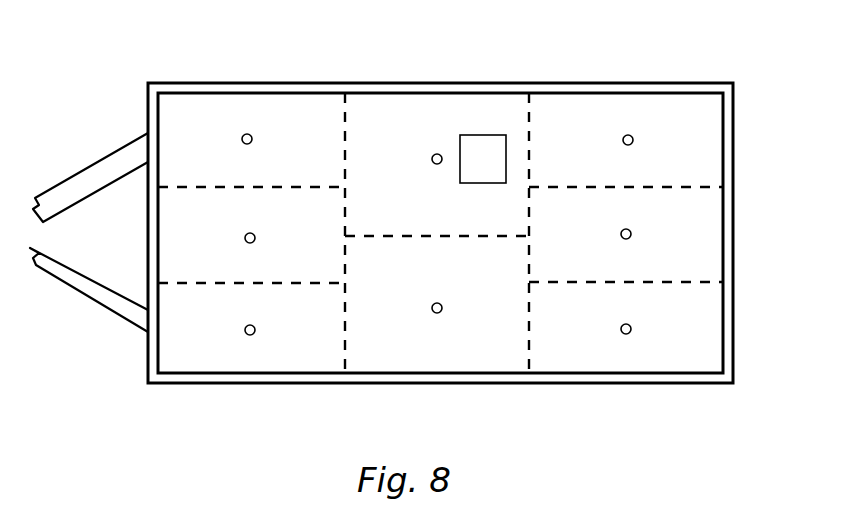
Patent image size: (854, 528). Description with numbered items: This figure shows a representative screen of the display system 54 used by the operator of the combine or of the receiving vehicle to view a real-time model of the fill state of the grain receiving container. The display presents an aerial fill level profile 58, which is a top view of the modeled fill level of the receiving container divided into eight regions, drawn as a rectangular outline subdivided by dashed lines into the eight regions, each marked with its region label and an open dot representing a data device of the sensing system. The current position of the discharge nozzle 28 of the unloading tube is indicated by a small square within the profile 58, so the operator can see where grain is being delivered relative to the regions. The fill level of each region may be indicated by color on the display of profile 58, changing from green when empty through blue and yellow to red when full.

The display system 54 is at (657, 67).
The aerial fill level profile 58 is at (233, 65).
The discharge nozzle 28 is at (484, 155).